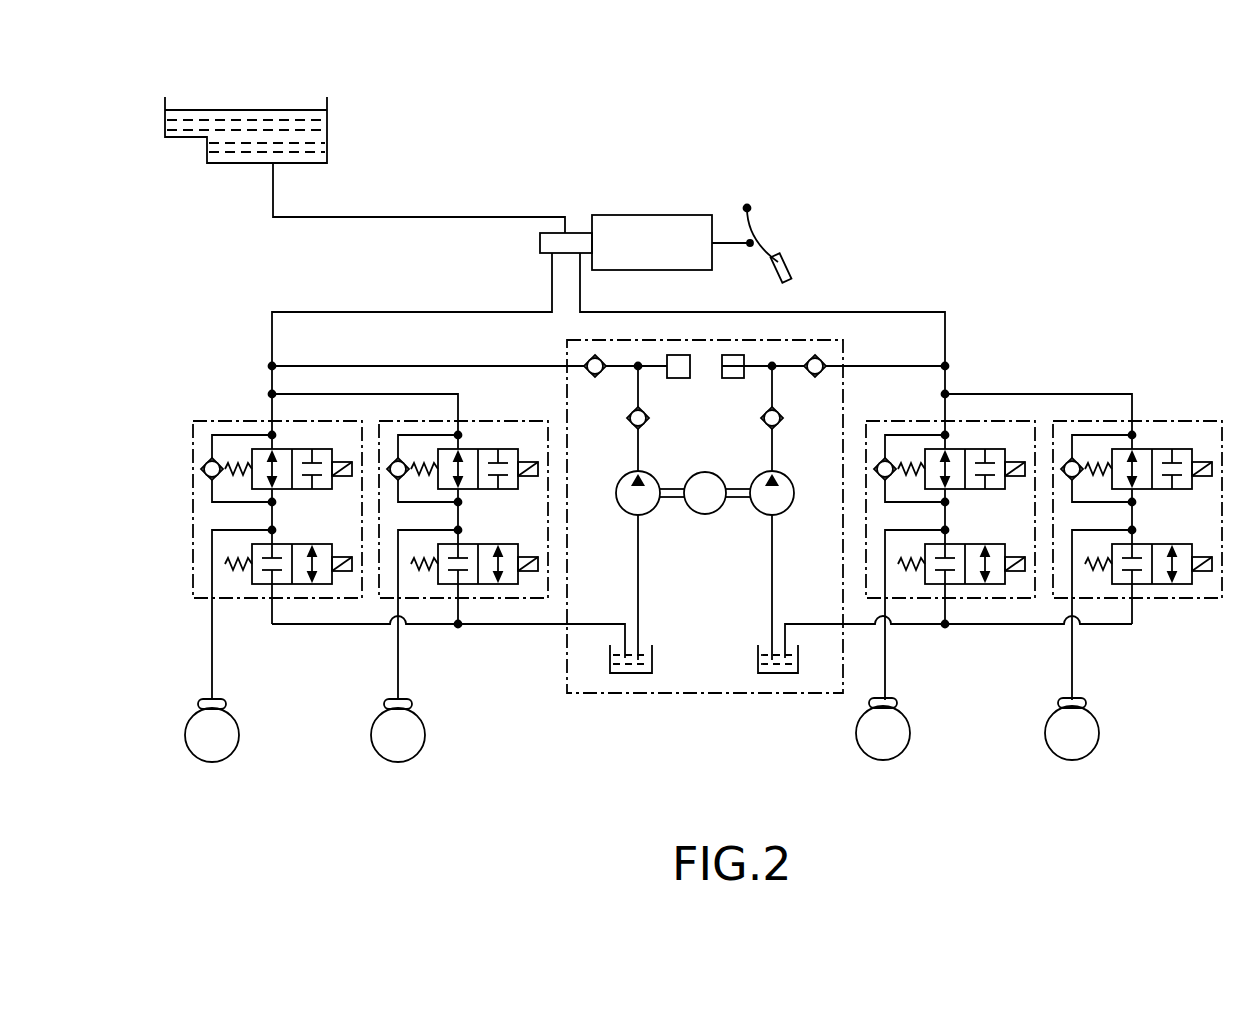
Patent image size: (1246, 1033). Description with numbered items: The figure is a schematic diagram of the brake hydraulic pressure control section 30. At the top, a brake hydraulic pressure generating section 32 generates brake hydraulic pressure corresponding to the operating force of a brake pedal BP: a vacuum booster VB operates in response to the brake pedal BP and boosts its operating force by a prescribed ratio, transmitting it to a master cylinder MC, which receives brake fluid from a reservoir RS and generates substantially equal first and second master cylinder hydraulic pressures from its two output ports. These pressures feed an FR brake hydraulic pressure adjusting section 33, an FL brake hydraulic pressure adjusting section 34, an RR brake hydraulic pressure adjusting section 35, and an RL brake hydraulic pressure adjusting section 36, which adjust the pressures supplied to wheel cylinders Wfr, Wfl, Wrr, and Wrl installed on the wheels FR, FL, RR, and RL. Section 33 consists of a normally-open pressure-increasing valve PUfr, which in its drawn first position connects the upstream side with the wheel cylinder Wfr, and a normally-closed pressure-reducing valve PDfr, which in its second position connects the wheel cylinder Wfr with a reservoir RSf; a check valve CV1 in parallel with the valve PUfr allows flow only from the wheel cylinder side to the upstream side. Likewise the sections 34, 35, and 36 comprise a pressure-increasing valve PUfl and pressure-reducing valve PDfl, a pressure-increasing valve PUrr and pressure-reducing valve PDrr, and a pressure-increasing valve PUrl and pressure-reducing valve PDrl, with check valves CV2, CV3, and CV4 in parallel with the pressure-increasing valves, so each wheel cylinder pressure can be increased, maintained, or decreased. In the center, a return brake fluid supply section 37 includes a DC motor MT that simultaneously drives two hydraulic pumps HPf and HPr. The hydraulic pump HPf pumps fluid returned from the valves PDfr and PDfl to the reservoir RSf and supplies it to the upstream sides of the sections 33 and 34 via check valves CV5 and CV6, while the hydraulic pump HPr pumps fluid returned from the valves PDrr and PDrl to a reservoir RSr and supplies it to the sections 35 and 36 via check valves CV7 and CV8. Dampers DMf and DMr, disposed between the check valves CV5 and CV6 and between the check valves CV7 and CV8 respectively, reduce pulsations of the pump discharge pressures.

The brake hydraulic pressure control section 30 is at (731, 131).
The brake hydraulic pressure generating section 32 is at (712, 210).
The FR brake hydraulic pressure adjusting section 33 is at (1137, 498).
The FL brake hydraulic pressure adjusting section 34 is at (950, 498).
The RR brake hydraulic pressure adjusting section 35 is at (463, 498).
The RL brake hydraulic pressure adjusting section 36 is at (205, 421).
The return brake fluid supply section 37 is at (712, 693).
The reservoir RS is at (328, 127).
The master cylinder MC is at (540, 243).
The vacuum booster VB is at (652, 242).
The brake pedal BP is at (788, 268).
The pressure-increasing valve PUrl is at (291, 449).
The pressure-reducing valve PDrl is at (291, 544).
The check valve CV4 is at (211, 480).
The pressure-increasing valve PUrr is at (471, 462).
The pressure-reducing valve PDrr is at (471, 608).
The check valve CV3 is at (421, 493).
The pressure-increasing valve PUfl is at (955, 462).
The pressure-reducing valve PDfl is at (956, 608).
The check valve CV2 is at (908, 493).
The pressure-increasing valve PUfr is at (1144, 462).
The pressure-reducing valve PDfr is at (1145, 608).
The check valve CV1 is at (1095, 493).
The check valve CV8 is at (599, 377).
The check valve CV7 is at (646, 424).
The check valve CV6 is at (818, 377).
The check valve CV5 is at (780, 424).
The damper DMr is at (678, 378).
The damper DMf is at (733, 378).
The hydraulic pump HPr is at (650, 477).
The hydraulic pump HPf is at (784, 477).
The DC motor MT is at (705, 514).
The reservoir RSr is at (653, 662).
The reservoir RSf is at (757, 658).
The wheel cylinder Wrl is at (227, 703).
The wheel cylinder Wrr is at (413, 703).
The wheel cylinder Wfl is at (898, 702).
The wheel cylinder Wfr is at (1087, 702).
The wheel RL is at (212, 735).
The wheel RR is at (398, 735).
The wheel FL is at (883, 733).
The wheel FR is at (1072, 733).